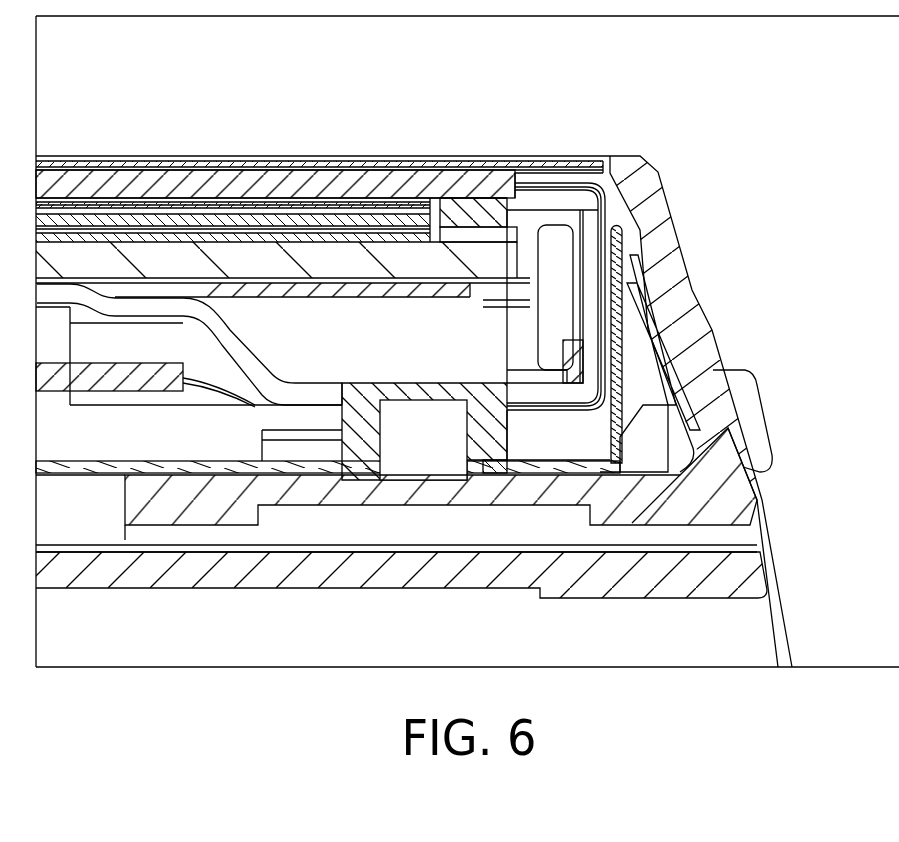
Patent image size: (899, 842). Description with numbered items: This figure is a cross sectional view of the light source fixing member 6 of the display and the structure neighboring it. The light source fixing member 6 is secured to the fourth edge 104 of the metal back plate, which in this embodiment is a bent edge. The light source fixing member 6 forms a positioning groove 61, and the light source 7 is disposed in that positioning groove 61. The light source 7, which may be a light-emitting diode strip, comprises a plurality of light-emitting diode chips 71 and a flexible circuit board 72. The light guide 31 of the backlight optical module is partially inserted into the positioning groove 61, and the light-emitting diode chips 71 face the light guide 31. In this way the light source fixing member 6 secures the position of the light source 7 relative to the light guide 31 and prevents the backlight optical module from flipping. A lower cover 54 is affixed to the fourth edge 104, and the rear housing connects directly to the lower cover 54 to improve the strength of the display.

The light guide 31 is at (252, 260).
The light source fixing member 6 is at (465, 237).
The light source 7 is at (567, 219).
The light-emitting diode chips 71 is at (527, 252).
The flexible circuit board 72 is at (555, 250).
The positioning groove 61 is at (523, 350).
The fourth edge 104 is at (625, 288).
The lower cover 54 is at (712, 424).